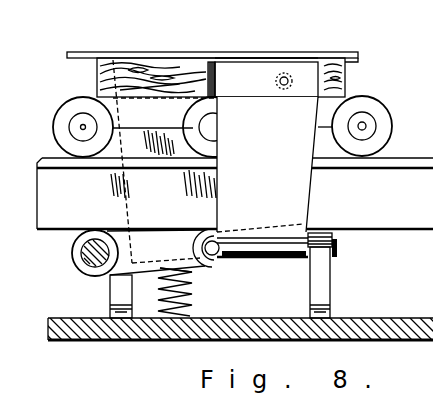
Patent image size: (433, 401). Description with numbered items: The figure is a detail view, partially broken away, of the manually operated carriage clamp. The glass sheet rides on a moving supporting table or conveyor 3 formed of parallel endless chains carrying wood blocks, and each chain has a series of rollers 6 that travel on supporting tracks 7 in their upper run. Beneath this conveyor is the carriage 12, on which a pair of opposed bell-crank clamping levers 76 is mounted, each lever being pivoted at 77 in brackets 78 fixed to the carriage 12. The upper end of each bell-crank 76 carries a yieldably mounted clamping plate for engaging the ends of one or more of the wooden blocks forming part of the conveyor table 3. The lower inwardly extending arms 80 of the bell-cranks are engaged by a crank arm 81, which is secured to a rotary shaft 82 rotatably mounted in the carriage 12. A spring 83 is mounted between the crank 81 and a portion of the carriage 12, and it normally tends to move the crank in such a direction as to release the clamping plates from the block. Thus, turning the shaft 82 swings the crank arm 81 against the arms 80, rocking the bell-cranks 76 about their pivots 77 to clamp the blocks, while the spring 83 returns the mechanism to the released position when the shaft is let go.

The bell-crank clamping lever 76 is at (265, 135).
The rollers 6 is at (369, 108).
The supporting table or conveyor 3 is at (428, 107).
The supporting tracks 7 is at (392, 161).
The rotary shaft 82 is at (90, 257).
The brackets 78 is at (118, 297).
The crank arm 81 is at (153, 248).
The lower inwardly extending arms 80 is at (211, 264).
The spring 83 is at (190, 290).
The pivot 77 is at (337, 247).
The carriage 12 is at (365, 326).